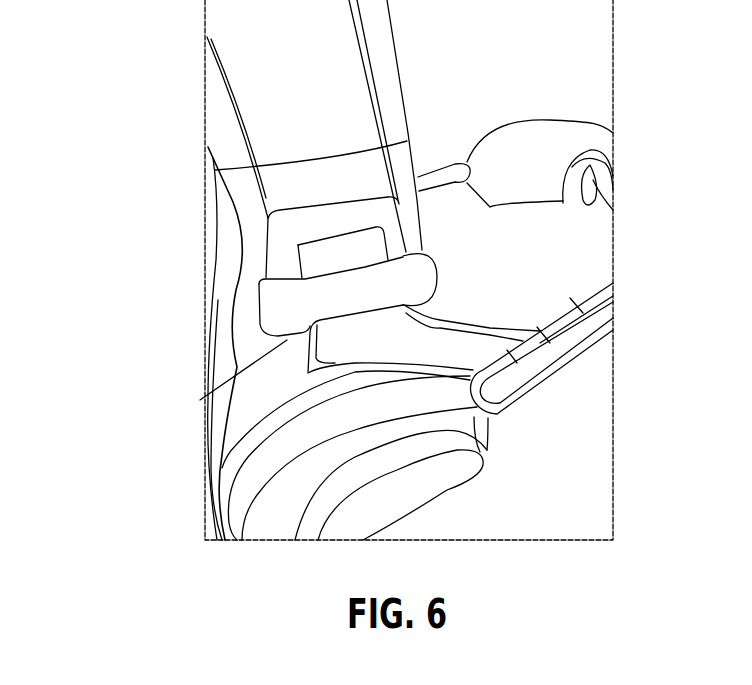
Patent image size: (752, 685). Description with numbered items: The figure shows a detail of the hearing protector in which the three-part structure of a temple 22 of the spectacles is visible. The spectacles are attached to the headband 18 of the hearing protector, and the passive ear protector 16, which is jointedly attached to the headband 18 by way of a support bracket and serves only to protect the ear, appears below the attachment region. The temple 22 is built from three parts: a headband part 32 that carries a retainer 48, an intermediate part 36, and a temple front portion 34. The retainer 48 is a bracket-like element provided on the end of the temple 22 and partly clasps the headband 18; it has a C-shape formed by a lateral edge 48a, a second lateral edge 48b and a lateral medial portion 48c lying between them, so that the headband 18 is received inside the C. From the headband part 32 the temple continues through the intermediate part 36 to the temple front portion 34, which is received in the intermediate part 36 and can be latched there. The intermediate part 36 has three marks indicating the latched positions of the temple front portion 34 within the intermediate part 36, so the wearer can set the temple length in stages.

The ear protector 16 is at (450, 490).
The headband 18 is at (400, 47).
The temple 22 is at (487, 324).
The headband part 32 is at (513, 327).
The temple front portion 34 is at (577, 347).
The intermediate part 36 is at (522, 408).
The retainer 48 is at (431, 257).
The lateral edge 48a is at (365, 267).
The lateral edge 48b is at (297, 337).
The lateral medial portion 48c is at (350, 293).